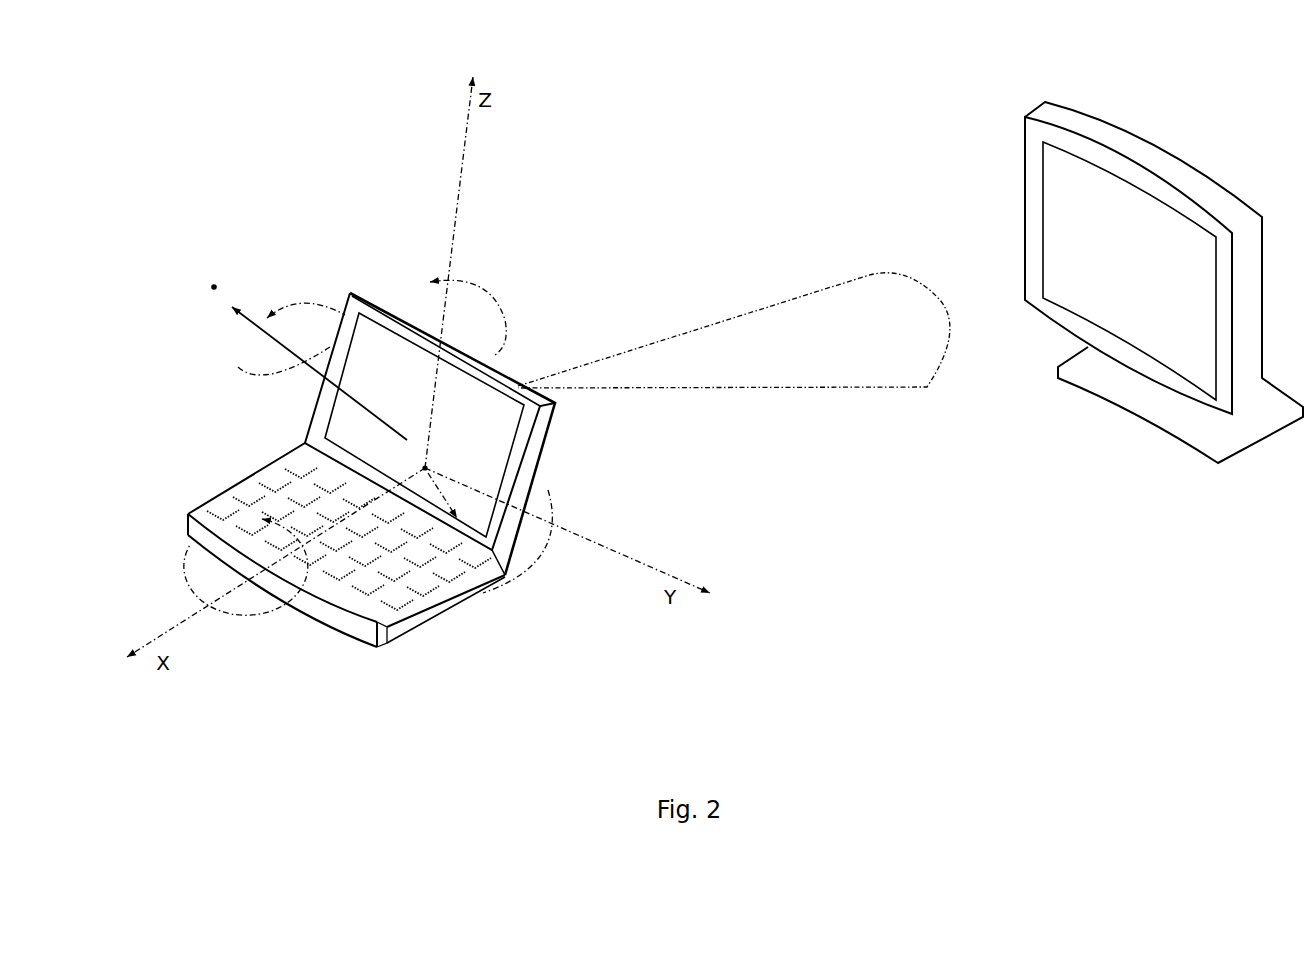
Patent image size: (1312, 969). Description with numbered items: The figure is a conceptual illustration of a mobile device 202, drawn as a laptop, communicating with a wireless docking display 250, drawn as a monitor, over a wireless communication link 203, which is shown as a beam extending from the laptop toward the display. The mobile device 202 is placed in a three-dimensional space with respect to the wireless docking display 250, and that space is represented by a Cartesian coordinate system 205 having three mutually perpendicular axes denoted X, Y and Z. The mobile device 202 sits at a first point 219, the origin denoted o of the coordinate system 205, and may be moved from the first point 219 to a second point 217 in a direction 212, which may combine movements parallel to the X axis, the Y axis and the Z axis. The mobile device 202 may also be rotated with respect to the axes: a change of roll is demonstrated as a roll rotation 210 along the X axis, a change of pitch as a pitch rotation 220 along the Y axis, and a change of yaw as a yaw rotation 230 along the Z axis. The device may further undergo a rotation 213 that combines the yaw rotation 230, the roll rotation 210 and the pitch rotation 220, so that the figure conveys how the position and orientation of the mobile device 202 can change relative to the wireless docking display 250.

The mobile device 202 is at (377, 648).
The wireless communication link 203 is at (863, 277).
The Cartesian coordinate system 205 is at (648, 200).
The roll rotation 210 is at (192, 572).
The direction 212 is at (327, 350).
The rotation 213 is at (310, 300).
The second point 217 is at (226, 270).
The first point 219 is at (445, 462).
The pitch rotation 220 is at (548, 490).
The yaw rotation 230 is at (472, 290).
The wireless docking display 250 is at (1102, 135).